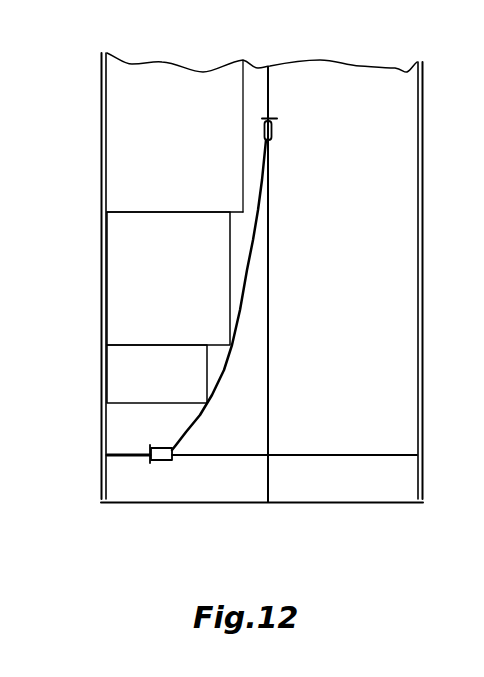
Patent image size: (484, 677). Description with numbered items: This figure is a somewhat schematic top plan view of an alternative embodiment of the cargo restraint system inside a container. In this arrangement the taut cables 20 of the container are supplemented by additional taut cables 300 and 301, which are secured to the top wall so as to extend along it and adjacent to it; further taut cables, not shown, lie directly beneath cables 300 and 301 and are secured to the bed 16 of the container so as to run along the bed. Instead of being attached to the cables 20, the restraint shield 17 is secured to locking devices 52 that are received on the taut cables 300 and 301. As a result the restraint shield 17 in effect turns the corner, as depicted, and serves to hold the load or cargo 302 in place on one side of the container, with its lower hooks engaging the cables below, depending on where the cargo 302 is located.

The bed 16 is at (214, 490).
The restraint shield 17 is at (251, 282).
The taut cables 20 is at (101, 297).
The locking devices 52 is at (290, 128).
The taut cable 300 is at (321, 456).
The taut cable 301 is at (270, 393).
The cargo 302 is at (200, 284).